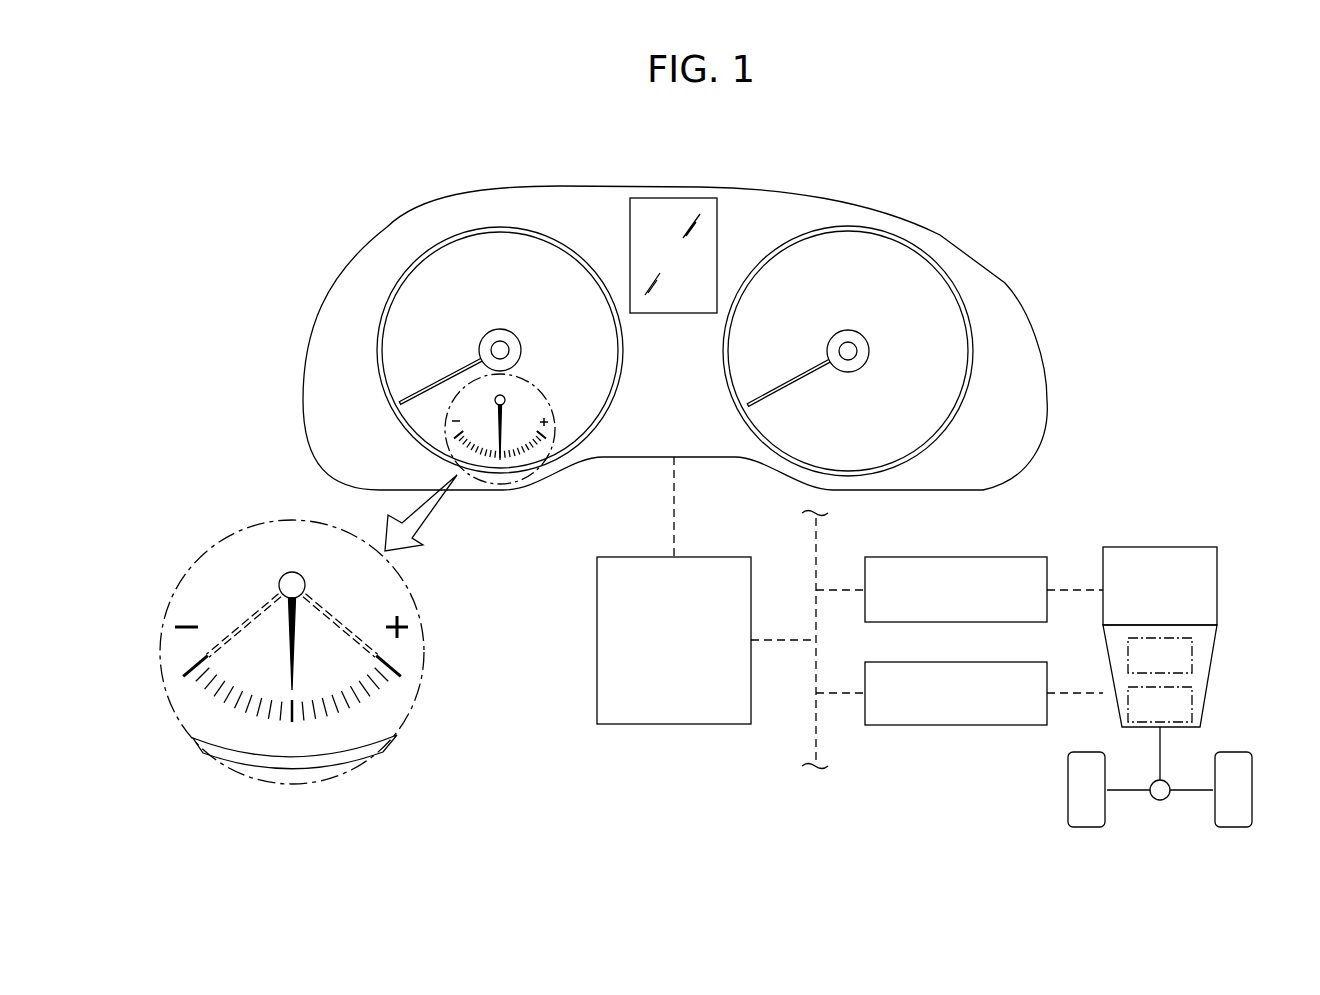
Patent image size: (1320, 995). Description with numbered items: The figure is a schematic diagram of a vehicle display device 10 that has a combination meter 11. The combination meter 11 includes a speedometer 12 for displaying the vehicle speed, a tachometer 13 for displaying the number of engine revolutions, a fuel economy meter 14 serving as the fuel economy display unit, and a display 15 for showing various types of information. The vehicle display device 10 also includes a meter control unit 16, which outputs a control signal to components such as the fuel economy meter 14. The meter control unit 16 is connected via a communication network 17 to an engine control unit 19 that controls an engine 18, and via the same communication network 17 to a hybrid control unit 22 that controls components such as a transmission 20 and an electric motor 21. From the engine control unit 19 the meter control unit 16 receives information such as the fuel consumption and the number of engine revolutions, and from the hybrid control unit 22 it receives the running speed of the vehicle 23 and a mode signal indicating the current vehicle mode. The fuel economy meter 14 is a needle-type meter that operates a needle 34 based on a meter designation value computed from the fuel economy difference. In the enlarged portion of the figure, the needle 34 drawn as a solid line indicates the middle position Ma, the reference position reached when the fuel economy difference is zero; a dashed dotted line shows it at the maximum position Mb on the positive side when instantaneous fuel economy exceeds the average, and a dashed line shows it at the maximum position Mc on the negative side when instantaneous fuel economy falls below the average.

The vehicle display device 10 is at (252, 212).
The combination meter 11 is at (990, 253).
The speedometer 12 is at (859, 244).
The tachometer 13 is at (488, 245).
The fuel economy meter 14 is at (528, 398).
The display 15 is at (644, 208).
The meter control unit 16 is at (597, 580).
The communication network 17 is at (816, 740).
The engine 18 is at (1160, 553).
The engine control unit 19 is at (1013, 557).
The transmission 20 is at (1183, 702).
The electric motor 21 is at (1183, 655).
The hybrid control unit 22 is at (988, 725).
The vehicle 23 is at (1212, 512).
The needle 34 is at (495, 415).
The middle position Ma is at (296, 703).
The maximum position on the positive side Mb is at (393, 670).
The maximum position on the negative side Mc is at (195, 672).